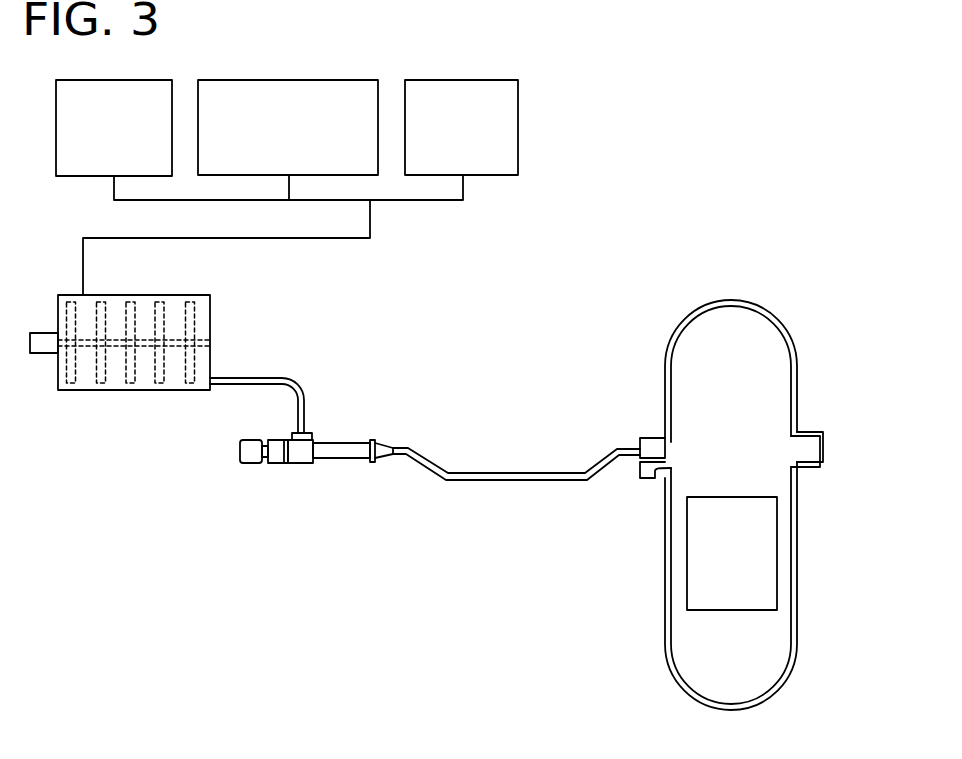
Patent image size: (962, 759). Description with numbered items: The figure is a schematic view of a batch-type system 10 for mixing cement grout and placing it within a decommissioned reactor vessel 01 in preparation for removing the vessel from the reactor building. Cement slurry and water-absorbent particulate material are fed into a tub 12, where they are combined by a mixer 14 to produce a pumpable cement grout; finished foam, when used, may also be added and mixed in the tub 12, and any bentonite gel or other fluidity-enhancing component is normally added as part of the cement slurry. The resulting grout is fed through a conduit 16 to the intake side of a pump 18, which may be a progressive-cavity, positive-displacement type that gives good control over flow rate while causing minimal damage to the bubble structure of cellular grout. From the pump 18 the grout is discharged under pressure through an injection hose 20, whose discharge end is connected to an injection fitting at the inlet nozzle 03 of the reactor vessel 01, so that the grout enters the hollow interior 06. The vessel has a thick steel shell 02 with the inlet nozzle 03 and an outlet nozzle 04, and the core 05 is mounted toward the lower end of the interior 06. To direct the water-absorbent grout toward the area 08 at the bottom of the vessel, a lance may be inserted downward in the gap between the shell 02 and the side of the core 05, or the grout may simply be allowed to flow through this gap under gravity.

The batch-type system 10 is at (469, 57).
The tub 12 is at (162, 365).
The mixer 14 is at (123, 363).
The conduit 16 is at (295, 381).
The pump 18 is at (338, 449).
The injection hose 20 is at (490, 478).
The reactor vessel 01 is at (737, 475).
The shell 02 is at (665, 385).
The inlet nozzle 03 is at (653, 444).
The outlet nozzle 04 is at (810, 448).
The core 05 is at (745, 563).
The hollow interior 06 is at (745, 403).
The area at the bottom of the vessel 08 is at (713, 691).